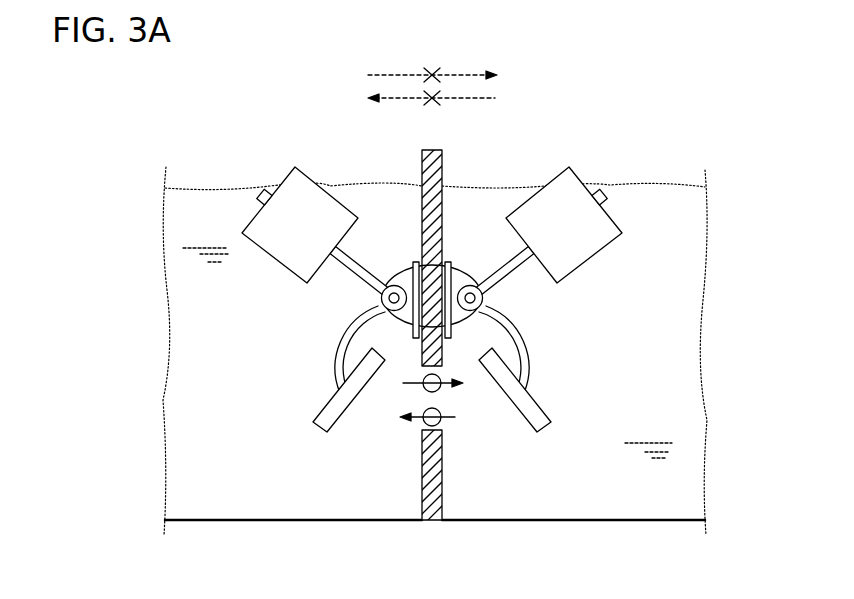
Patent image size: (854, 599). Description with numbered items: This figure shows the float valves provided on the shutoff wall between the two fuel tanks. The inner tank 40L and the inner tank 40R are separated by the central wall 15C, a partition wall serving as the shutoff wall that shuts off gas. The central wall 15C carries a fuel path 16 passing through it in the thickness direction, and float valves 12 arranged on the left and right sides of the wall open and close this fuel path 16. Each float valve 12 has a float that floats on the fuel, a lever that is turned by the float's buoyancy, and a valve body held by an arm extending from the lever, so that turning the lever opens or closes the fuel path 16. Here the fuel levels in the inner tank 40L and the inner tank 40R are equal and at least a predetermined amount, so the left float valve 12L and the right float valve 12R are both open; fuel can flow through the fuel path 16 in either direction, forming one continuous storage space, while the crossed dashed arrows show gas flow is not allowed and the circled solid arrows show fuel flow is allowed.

The float valve 12 is at (435, 337).
The float valve located on the left side 12L is at (226, 201).
The float valve located on the right side 12R is at (641, 194).
The central wall 15C is at (443, 178).
The fuel path 16 is at (444, 431).
The inner tank 40L is at (324, 315).
The inner tank 40R is at (541, 315).